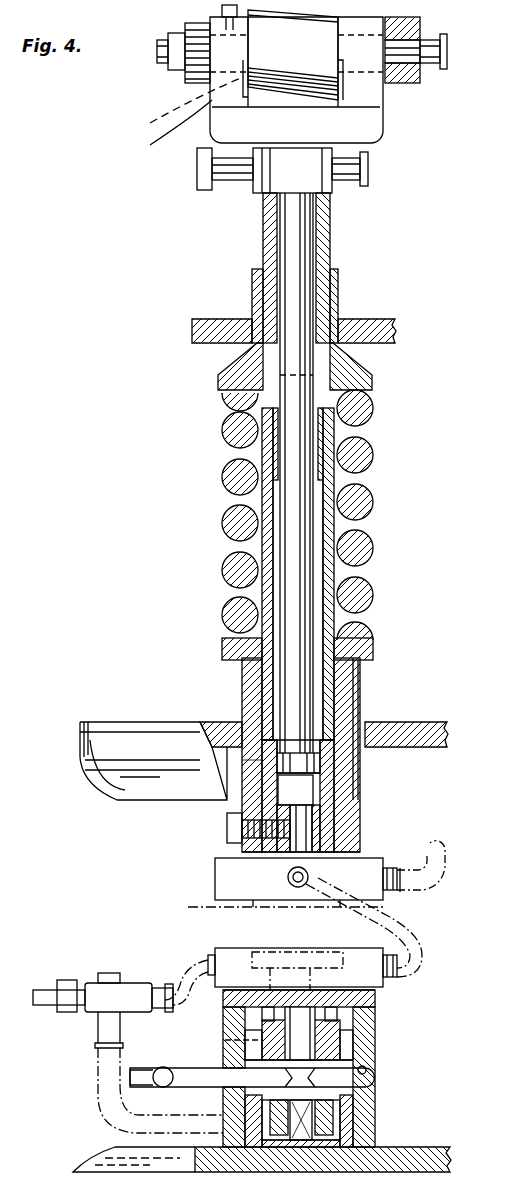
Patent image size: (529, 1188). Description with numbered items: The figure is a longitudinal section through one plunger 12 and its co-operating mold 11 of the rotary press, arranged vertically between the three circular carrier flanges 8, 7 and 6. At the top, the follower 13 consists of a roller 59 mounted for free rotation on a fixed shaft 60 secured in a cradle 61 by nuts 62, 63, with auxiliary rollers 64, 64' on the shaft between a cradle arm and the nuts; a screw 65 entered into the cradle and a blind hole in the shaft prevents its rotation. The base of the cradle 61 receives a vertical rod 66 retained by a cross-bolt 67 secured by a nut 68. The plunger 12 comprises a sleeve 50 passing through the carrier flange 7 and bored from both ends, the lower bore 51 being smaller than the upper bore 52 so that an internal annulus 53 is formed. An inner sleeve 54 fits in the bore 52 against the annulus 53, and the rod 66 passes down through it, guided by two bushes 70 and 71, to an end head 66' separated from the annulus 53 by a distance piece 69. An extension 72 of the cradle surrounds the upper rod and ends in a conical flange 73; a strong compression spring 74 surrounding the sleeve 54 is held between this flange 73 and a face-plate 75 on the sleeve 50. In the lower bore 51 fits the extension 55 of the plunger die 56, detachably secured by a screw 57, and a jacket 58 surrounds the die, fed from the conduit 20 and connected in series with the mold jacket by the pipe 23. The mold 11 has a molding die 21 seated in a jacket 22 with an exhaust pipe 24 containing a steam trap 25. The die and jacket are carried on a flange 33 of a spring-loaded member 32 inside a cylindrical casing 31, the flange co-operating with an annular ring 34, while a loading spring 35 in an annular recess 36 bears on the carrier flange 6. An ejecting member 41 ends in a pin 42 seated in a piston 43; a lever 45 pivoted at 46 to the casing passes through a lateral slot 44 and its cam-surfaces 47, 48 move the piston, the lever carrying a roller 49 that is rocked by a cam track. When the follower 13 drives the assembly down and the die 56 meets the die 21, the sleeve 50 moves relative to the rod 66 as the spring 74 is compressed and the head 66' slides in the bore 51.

The screw 65 is at (222, 10).
The nut 63 is at (172, 62).
The auxiliary roller 64' is at (161, 67).
The fixed shaft 60 is at (160, 118).
The cradle 61 is at (158, 140).
The cross-bolt 67 is at (197, 168).
The nut 68 is at (212, 185).
The vertical rod 66 is at (221, 473).
The extension of the cradle 72 is at (265, 253).
The carrier flange 8 is at (192, 325).
The nut 62 is at (440, 68).
The auxiliary roller 64 is at (418, 74).
The follower 13 is at (388, 110).
The roller 59 is at (320, 95).
The conical end flange 73 is at (365, 368).
The bush 71 is at (320, 434).
The compression spring 74 is at (368, 497).
The face-plate 75 is at (373, 650).
The bush 70 is at (330, 672).
The inner sleeve 54 is at (330, 690).
The upper bore 52 is at (265, 740).
The carrier flange 7 is at (105, 770).
The end flange or head 66' is at (219, 785).
The sleeve 50 is at (262, 805).
The screw 57 is at (227, 828).
The jacket 58 is at (215, 868).
The molding die 56 is at (269, 906).
The internal flange or annulus 53 is at (320, 760).
The distance piece 69 is at (300, 780).
The lower bore 51 is at (300, 797).
The die extension 55 is at (310, 825).
The plunger 12 is at (355, 850).
The delivery conduit 20 is at (447, 878).
The steam and cooling water supply pipe 23 is at (405, 930).
The ejecting member 41 is at (290, 975).
The molding die 21 is at (322, 950).
The delivery or exhaust pipe 24 is at (180, 965).
The steam trap 25 is at (90, 973).
The jacket 22 is at (385, 988).
The flange 33 is at (375, 1000).
The annular ring 34 is at (375, 1028).
The cylindrical outer casing 31 is at (340, 1045).
The lateral slot 44 is at (262, 1012).
The pin 42 is at (224, 1039).
The piston 43 is at (260, 1055).
The roller 49 is at (158, 1068).
The lever 45 is at (262, 1105).
The pivot 46 is at (372, 1080).
The spring-loaded member 32 is at (345, 1080).
The mold 11 is at (303, 1065).
The semi-circular cam-surface 47 is at (345, 1092).
The semi-circular cam-surface 48 is at (340, 1110).
The loading spring 35 is at (365, 1140).
The annular recess 36 is at (195, 1125).
The carrier flange 6 is at (108, 1172).